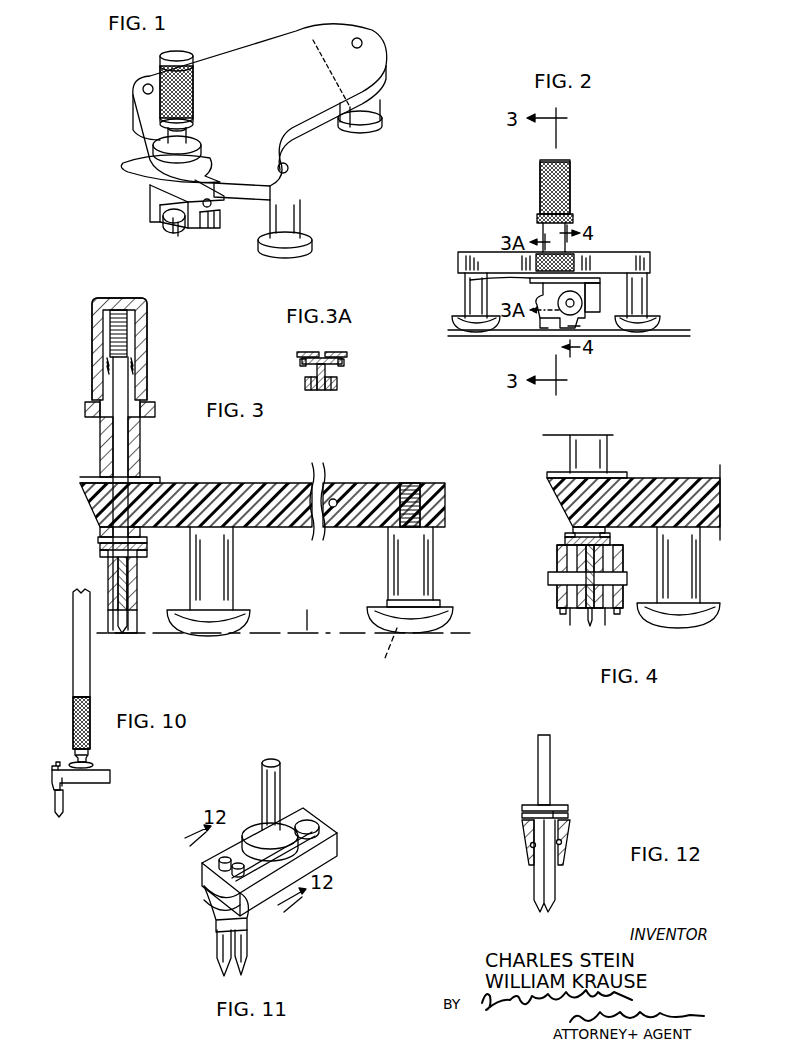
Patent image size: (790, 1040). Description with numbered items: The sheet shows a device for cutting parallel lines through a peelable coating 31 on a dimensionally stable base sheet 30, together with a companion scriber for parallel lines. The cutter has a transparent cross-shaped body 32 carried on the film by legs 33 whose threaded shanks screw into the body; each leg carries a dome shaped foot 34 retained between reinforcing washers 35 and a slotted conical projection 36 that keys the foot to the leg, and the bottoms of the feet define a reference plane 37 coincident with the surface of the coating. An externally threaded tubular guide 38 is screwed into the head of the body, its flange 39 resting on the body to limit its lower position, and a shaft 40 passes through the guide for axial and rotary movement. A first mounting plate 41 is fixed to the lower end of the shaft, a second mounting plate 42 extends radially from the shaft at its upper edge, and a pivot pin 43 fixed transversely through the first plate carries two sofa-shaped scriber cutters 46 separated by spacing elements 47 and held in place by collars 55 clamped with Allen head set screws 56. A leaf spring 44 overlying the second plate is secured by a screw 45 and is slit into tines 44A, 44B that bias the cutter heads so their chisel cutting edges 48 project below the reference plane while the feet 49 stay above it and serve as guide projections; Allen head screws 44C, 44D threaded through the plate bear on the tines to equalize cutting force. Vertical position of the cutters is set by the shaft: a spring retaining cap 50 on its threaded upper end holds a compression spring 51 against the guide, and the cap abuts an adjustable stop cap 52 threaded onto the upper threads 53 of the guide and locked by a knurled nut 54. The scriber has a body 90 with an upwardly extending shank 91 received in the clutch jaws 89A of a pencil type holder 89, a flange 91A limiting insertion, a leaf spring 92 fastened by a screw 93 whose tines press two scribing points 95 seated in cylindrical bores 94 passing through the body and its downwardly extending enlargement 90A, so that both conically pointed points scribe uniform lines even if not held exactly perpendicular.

In FIG. 2, the base sheet 30 is at (670, 334).
In FIG. 3, the base sheet 30 is at (190, 636).
In FIG. 2, the peelable coating 31 is at (665, 330).
In FIG. 3, the peelable coating 31 is at (156, 636).
In FIG. 1, the cross-shaped body 32 is at (244, 78).
In FIG. 2, the cross-shaped body 32 is at (554, 262).
In FIG. 3, the cross-shaped body 32 is at (272, 488).
In FIG. 4, the cross-shaped body 32 is at (633, 502).
In FIG. 1, the legs 33 is at (326, 169).
In FIG. 2, the legs 33 is at (645, 292).
In FIG. 3, the legs 33 is at (428, 555).
In FIG. 4, the legs 33 is at (621, 519).
In FIG. 1, the dome shaped feet 34 is at (285, 245).
In FIG. 2, the dome shaped feet 34 is at (456, 325).
In FIG. 3, the dome shaped feet 34 is at (430, 628).
In FIG. 4, the dome shaped feet 34 is at (678, 615).
In FIG. 3, the reinforcing washers 35 is at (385, 603).
In FIG. 3, the conical projections 36 is at (381, 656).
In FIG. 2, the reference plane 37 is at (665, 337).
In FIG. 3, the reference plane 37 is at (307, 610).
In FIG. 1, the tubular guide 38 is at (190, 133).
In FIG. 2, the tubular guide 38 is at (554, 237).
In FIG. 3, the tubular guide 38 is at (142, 453).
In FIG. 4, the tubular guide 38 is at (589, 530).
In FIG. 1, the flange 39 is at (200, 145).
In FIG. 3, the flange 39 is at (160, 480).
In FIG. 4, the flange 39 is at (587, 475).
In FIG. 3, the shaft 40 is at (118, 445).
In FIG. 3A, the first mounting plate 41 is at (321, 390).
In FIG. 3, the first mounting plate 41 is at (122, 636).
In FIG. 4, the first mounting plate 41 is at (590, 613).
In FIG. 1, the second mounting plate 42 is at (214, 206).
In FIG. 2, the second mounting plate 42 is at (597, 285).
In FIG. 3A, the second mounting plate 42 is at (302, 361).
In FIG. 3, the second mounting plate 42 is at (100, 547).
In FIG. 4, the second mounting plate 42 is at (610, 541).
In FIG. 1, the pivot pin 43 is at (166, 223).
In FIG. 4, the pivot pin 43 is at (550, 580).
In FIG. 1, the leaf spring 44 is at (145, 172).
In FIG. 2, the leaf spring 44 is at (582, 280).
In FIG. 2, the tine 44A is at (470, 280).
In FIG. 3A, the tine 44A is at (297, 353).
In FIG. 3, the tine 44A is at (98, 540).
In FIG. 3A, the tine 44B is at (345, 353).
In FIG. 3, the tine 44B is at (142, 540).
In FIG. 3A, the Allen head screw 44C is at (303, 365).
In FIG. 3, the Allen head screw 44C is at (100, 553).
In FIG. 4, the Allen head screw 44C is at (566, 540).
In FIG. 3A, the Allen head screw 44D is at (343, 365).
In FIG. 3, the Allen head screw 44D is at (147, 553).
In FIG. 4, the Allen head screw 44D is at (610, 548).
In FIG. 1, the screw 45 is at (206, 230).
In FIG. 1, the sofa-shaped scriber cutters 46 is at (150, 203).
In FIG. 2, the sofa-shaped scriber cutters 46 is at (540, 298).
In FIG. 3A, the sofa-shaped scriber cutters 46 is at (308, 380).
In FIG. 3, the sofa-shaped scriber cutters 46 is at (108, 585).
In FIG. 2, the spacing elements 47 is at (595, 312).
In FIG. 3A, the spacing elements 47 is at (312, 390).
In FIG. 3, the spacing elements 47 is at (112, 575).
In FIG. 4, the spacing elements 47 is at (590, 610).
In FIG. 2, the cutting edges 48 is at (540, 326).
In FIG. 4, the cutting edges 48 is at (606, 614).
In FIG. 2, the feet 49 is at (578, 328).
In FIG. 3, the spring retaining cap 50 is at (138, 326).
In FIG. 3, the compression spring 51 is at (136, 366).
In FIG. 1, the adjustable stop cap 52 is at (185, 57).
In FIG. 2, the adjustable stop cap 52 is at (555, 191).
In FIG. 3, the adjustable stop cap 52 is at (95, 331).
In FIG. 3, the upper threads 53 is at (100, 420).
In FIG. 3, the knurled nut 54 is at (152, 405).
In FIG. 1, the collars 55 is at (178, 238).
In FIG. 4, the collars 55 is at (558, 552).
In FIG. 4, the Allen head set screws 56 is at (563, 615).
In FIG. 10, the holder 89 is at (80, 666).
In FIG. 10, the clutch jaws 89A is at (89, 752).
In FIG. 10, the body 90 is at (88, 783).
In FIG. 11, the body 90 is at (330, 852).
In FIG. 11, the downwardly extending enlargement 90A is at (250, 915).
In FIG. 11, the shank 91 is at (279, 783).
In FIG. 12, the shank 91 is at (551, 764).
In FIG. 11, the flange 91A is at (252, 830).
In FIG. 12, the flange 91A is at (568, 808).
In FIG. 11, the leaf spring 92 is at (296, 815).
In FIG. 11, the screw 93 is at (316, 820).
In FIG. 12, the scribing point receiving bores 94 is at (564, 838).
In FIG. 10, the scribing points 95 is at (61, 815).
In FIG. 11, the scribing points 95 is at (220, 940).
In FIG. 12, the scribing points 95 is at (556, 878).